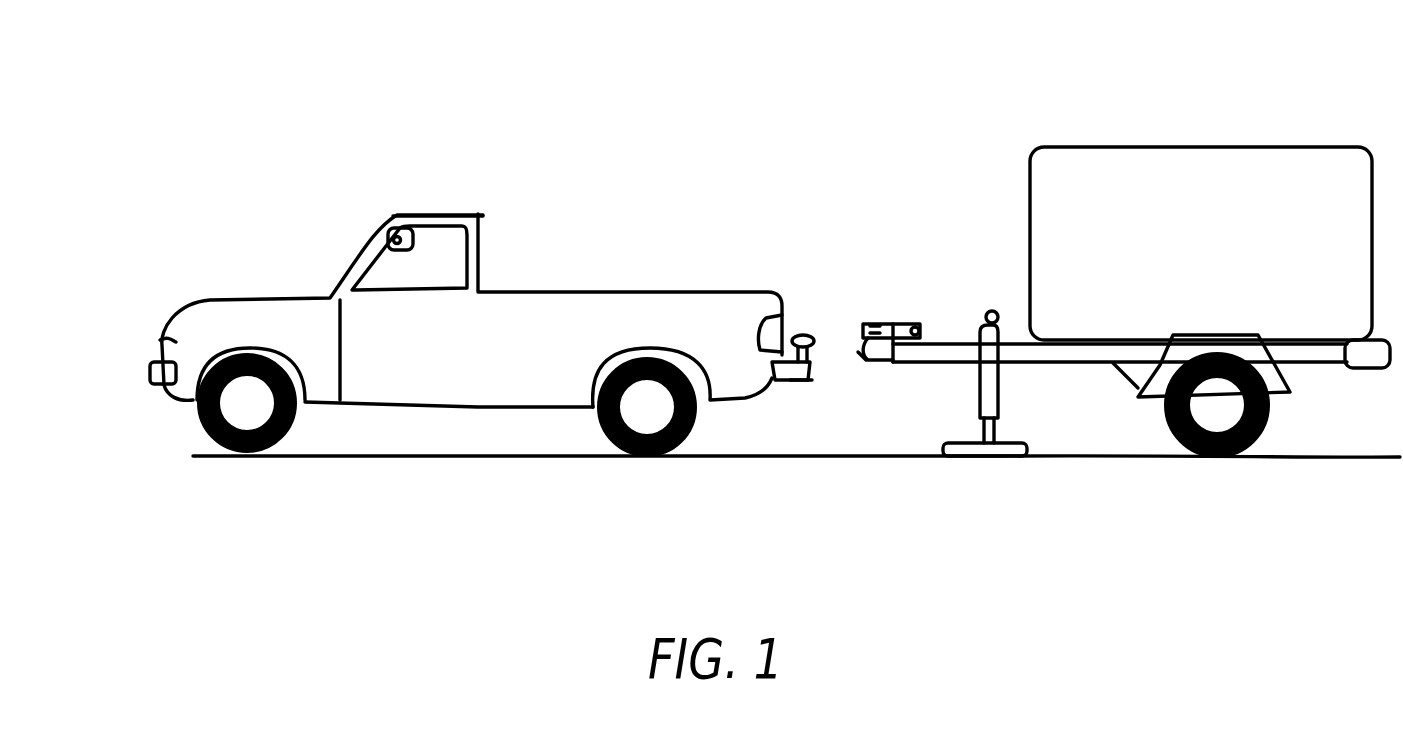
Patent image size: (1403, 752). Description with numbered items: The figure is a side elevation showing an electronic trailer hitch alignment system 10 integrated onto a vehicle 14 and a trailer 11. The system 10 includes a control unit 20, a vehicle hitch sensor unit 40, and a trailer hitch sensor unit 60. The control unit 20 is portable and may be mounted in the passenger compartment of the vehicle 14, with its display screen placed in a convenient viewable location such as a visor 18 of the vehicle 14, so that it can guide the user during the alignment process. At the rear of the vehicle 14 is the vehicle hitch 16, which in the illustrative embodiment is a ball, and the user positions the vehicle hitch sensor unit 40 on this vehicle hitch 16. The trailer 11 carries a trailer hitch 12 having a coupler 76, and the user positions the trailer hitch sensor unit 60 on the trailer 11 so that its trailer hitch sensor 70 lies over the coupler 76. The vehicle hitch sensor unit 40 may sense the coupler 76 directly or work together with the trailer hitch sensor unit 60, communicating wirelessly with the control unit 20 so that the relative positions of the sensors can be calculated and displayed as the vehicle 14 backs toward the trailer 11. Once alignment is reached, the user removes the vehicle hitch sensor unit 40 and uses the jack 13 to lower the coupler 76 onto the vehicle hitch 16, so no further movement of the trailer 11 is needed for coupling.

The electronic trailer hitch alignment system 10 is at (647, 80).
The trailer 11 is at (1162, 182).
The trailer hitch 12 is at (868, 345).
The jack 13 is at (1002, 405).
The vehicle 14 is at (160, 350).
The vehicle hitch 16 is at (807, 389).
The visor 18 is at (420, 189).
The control unit 20 is at (410, 240).
The vehicle hitch sensor unit 40 is at (820, 395).
The trailer hitch sensor unit 60 is at (888, 322).
The trailer hitch sensor 70 is at (870, 322).
The coupler 76 is at (862, 355).